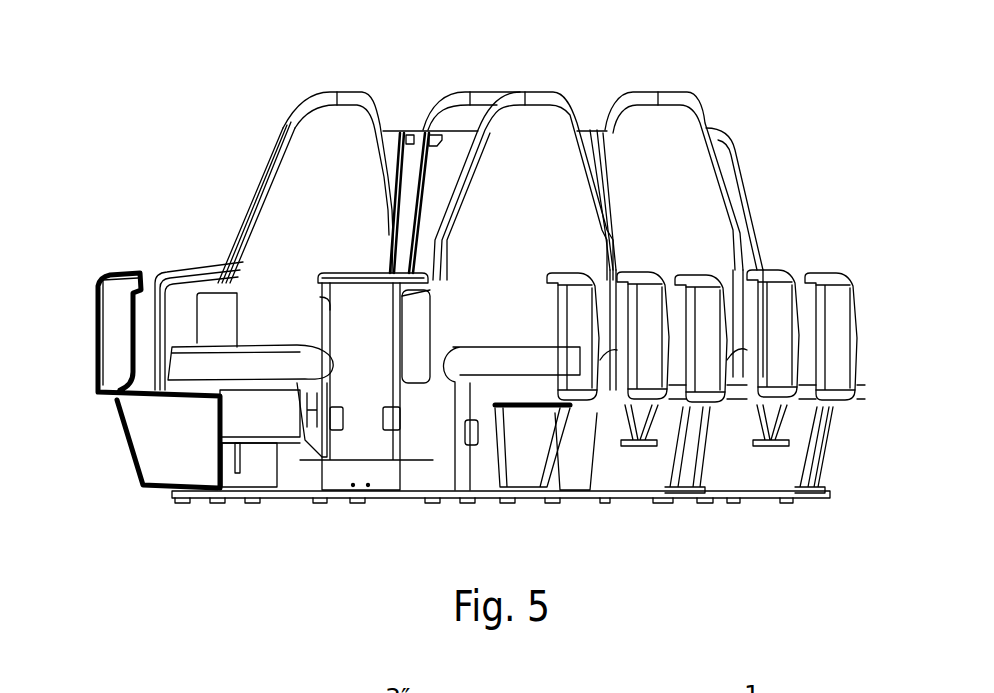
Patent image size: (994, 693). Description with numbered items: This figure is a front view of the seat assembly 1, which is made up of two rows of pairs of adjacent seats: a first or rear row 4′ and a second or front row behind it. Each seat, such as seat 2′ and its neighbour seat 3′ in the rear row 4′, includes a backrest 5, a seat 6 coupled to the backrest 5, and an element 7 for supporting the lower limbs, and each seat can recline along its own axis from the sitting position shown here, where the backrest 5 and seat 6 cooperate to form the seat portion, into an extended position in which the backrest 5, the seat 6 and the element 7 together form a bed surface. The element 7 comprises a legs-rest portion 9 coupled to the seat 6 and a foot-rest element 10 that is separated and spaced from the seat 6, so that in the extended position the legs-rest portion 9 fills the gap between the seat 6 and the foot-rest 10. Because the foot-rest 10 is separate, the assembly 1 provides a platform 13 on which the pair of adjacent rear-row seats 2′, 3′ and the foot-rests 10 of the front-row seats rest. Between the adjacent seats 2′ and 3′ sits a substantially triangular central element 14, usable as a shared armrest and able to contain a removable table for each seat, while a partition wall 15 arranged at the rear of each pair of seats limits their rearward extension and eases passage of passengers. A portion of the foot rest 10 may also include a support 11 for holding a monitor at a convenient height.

The assembly 1 is at (719, 68).
The seat 2′ is at (790, 248).
The seat 3′ is at (418, 97).
The first row 4′ is at (795, 196).
The backrest 5 is at (298, 145).
The seat 6 is at (262, 363).
The element for supporting the lower limbs 7 is at (78, 390).
The legs-rest portion 9 is at (252, 413).
The foot-rest element 10 is at (530, 400).
The support 11 is at (107, 330).
The platform 13 is at (623, 498).
The central element 14 is at (335, 278).
The partition wall 15 is at (596, 135).